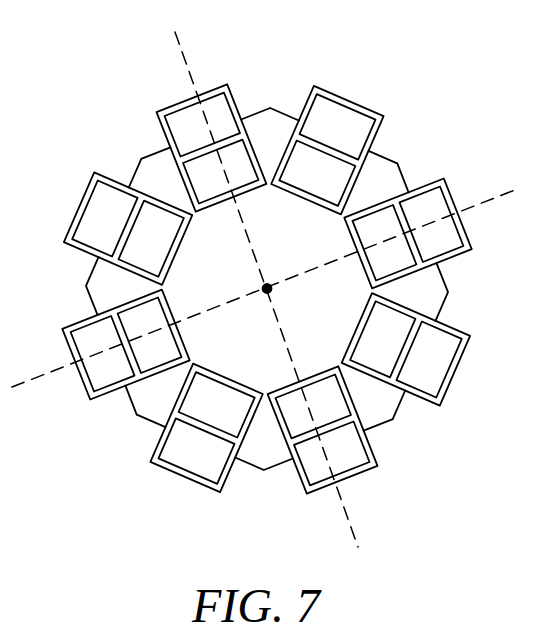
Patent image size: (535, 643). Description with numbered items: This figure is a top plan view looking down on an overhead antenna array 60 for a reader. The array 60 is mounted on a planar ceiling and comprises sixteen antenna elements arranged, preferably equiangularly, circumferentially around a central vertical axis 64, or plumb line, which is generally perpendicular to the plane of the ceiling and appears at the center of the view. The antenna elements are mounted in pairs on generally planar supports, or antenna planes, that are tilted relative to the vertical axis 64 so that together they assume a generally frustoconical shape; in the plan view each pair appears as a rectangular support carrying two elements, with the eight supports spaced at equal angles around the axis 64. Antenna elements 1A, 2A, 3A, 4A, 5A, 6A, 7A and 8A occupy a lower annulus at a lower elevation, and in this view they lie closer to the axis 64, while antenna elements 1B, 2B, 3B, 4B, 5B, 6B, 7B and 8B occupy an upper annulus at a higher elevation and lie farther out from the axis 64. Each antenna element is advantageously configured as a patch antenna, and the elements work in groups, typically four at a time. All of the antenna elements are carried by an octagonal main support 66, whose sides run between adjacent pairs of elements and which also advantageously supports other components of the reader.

The overhead antenna array 60 is at (42, 44).
The central vertical axis 64 is at (267, 284).
The octagonal main support 66 is at (145, 400).
The antenna element 1A is at (123, 323).
The antenna element 1B is at (85, 352).
The antenna element 2A is at (393, 223).
The antenna element 2B is at (447, 237).
The antenna element 3A is at (197, 167).
The antenna element 3B is at (183, 118).
The antenna element 4A is at (333, 413).
The antenna element 4B is at (348, 458).
The antenna element 5A is at (137, 255).
The antenna element 5B is at (92, 218).
The antenna element 6A is at (405, 328).
The antenna element 6B is at (440, 365).
The antenna element 7A is at (305, 146).
The antenna element 7B is at (345, 113).
The antenna element 8A is at (228, 428).
The antenna element 8B is at (193, 467).